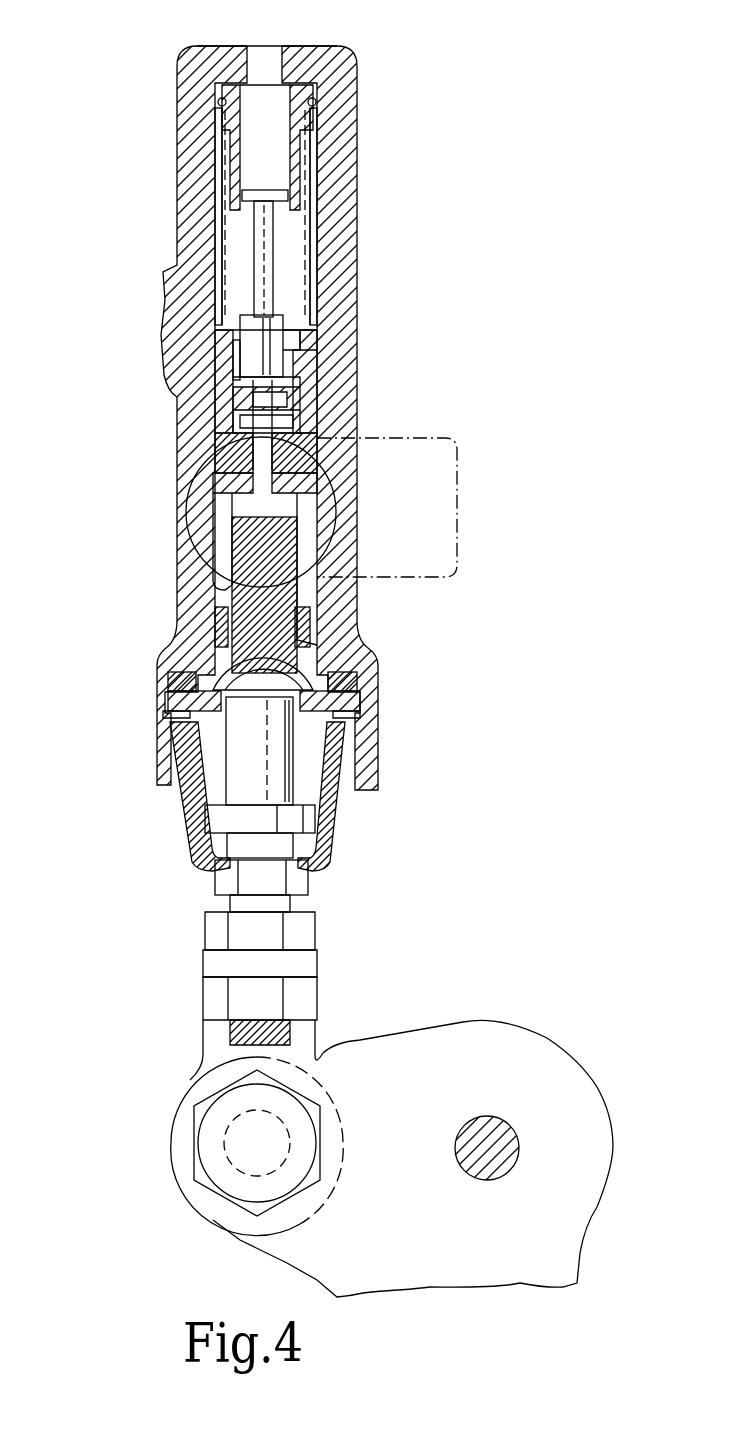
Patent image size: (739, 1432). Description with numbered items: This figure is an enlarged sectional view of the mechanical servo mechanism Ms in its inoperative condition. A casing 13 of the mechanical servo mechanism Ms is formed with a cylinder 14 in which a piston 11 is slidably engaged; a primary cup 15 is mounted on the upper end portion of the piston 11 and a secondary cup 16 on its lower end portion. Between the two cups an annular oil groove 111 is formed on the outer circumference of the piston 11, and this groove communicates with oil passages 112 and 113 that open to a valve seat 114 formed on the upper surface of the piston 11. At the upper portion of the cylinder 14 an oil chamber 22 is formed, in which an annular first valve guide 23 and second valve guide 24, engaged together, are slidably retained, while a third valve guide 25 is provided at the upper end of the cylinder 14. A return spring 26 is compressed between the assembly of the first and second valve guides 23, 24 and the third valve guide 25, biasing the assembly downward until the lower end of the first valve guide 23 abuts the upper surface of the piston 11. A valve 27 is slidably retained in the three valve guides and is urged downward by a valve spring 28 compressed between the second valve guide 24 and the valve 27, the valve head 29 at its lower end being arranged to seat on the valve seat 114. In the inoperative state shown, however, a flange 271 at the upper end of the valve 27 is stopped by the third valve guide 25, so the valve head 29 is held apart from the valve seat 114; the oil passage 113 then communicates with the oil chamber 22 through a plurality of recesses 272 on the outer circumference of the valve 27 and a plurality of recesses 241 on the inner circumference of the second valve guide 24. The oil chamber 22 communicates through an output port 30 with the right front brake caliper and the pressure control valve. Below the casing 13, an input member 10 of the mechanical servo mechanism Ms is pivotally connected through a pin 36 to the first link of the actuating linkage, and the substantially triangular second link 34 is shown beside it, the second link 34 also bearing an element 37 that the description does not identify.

The input member 10 is at (240, 777).
The piston 11 is at (247, 577).
The annular oil groove 111 is at (205, 580).
The oil passage 112 is at (240, 508).
The oil passage 113 is at (240, 481).
The valve seat 114 is at (300, 404).
The casing 13 is at (356, 231).
The cylinder 14 is at (305, 517).
The primary cup 15 is at (297, 440).
The secondary cup 16 is at (315, 638).
The oil chamber 22 is at (240, 245).
The first valve guide 23 is at (250, 408).
The second valve guide 24 is at (232, 345).
The recesses 241 is at (292, 328).
The third valve guide 25 is at (300, 182).
The return spring 26 is at (218, 110).
The valve 27 is at (277, 270).
The flange 271 is at (260, 190).
The recesses 272 is at (300, 372).
The valve spring 28 is at (235, 356).
The valve head 29 is at (178, 452).
The output port 30 is at (277, 68).
The second link 34 is at (445, 1060).
The pin 36 is at (207, 1160).
The mounting hole 37 is at (493, 1140).
The mechanical servo mechanism Ms is at (177, 167).